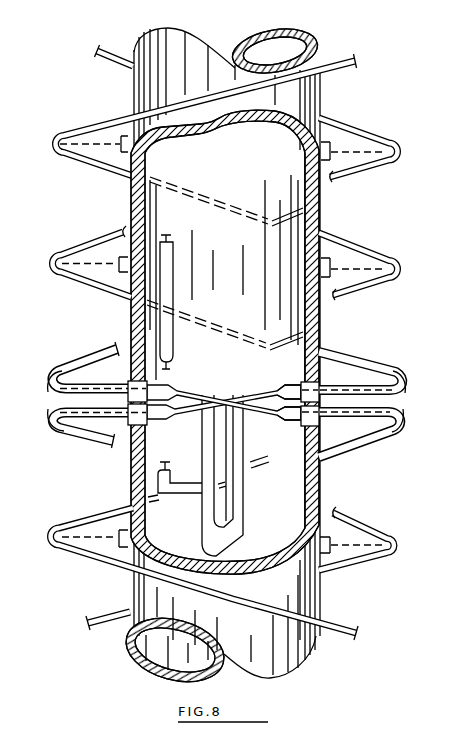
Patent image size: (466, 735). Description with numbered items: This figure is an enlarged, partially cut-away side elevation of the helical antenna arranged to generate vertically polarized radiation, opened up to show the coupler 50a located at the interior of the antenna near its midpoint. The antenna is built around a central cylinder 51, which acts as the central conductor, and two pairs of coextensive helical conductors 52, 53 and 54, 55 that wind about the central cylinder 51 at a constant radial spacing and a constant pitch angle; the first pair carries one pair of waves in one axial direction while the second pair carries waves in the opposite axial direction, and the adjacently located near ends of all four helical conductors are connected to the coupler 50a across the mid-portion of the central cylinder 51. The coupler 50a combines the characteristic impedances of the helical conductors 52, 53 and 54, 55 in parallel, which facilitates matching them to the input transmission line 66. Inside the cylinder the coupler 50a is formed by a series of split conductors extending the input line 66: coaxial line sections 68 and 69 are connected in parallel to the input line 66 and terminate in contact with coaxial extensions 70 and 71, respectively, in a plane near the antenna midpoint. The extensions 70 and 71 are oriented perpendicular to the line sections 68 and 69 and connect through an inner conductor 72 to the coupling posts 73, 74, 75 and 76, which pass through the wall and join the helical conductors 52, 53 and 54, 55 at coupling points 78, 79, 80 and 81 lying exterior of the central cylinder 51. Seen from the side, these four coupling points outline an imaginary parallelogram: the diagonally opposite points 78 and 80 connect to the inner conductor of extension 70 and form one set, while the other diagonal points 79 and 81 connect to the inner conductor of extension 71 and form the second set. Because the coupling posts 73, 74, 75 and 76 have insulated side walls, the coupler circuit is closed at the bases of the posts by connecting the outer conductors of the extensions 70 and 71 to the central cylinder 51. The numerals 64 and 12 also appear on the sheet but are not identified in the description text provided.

The central cylinder 51 is at (316, 656).
The coupler 50a is at (386, 353).
The helical conductor 52 is at (366, 247).
The helical conductor 53 is at (88, 242).
The helical conductor 54 is at (361, 565).
The helical conductor 55 is at (78, 558).
The spring finger 64 is at (350, 145).
The input transmission line 66 is at (176, 350).
The coaxial line section 68 is at (202, 457).
The coaxial line section 69 is at (246, 506).
The coaxial extension 70 is at (290, 386).
The coaxial extension 71 is at (290, 427).
The inner conductor 72 is at (267, 409).
The coupling post 73 is at (343, 386).
The coupling post 74 is at (87, 382).
The coupling post 75 is at (88, 420).
The coupling post 76 is at (353, 423).
The coupling point 78 is at (403, 389).
The coupling point 79 is at (50, 383).
The coupling point 80 is at (52, 423).
The coupling point 81 is at (400, 421).
The housing 12 is at (425, 732).